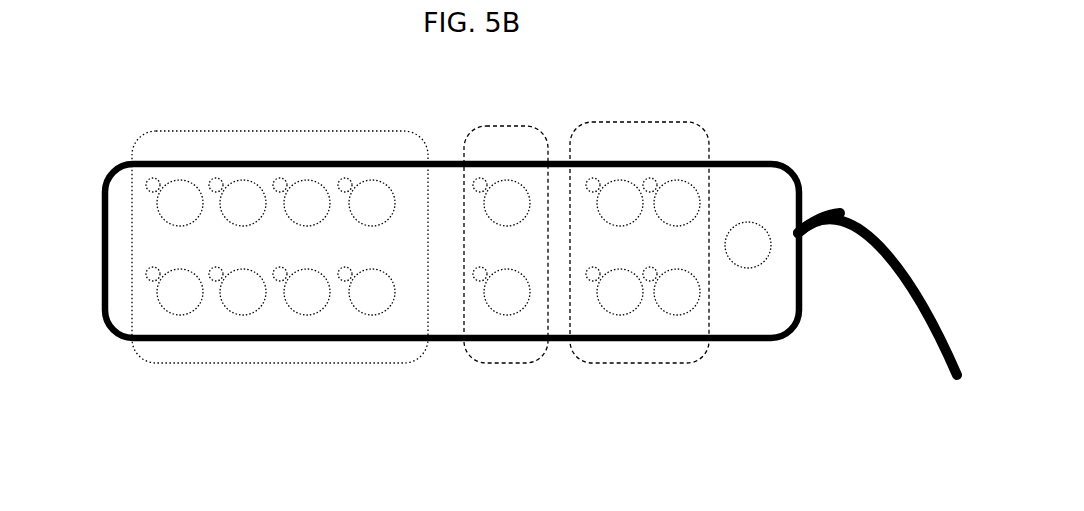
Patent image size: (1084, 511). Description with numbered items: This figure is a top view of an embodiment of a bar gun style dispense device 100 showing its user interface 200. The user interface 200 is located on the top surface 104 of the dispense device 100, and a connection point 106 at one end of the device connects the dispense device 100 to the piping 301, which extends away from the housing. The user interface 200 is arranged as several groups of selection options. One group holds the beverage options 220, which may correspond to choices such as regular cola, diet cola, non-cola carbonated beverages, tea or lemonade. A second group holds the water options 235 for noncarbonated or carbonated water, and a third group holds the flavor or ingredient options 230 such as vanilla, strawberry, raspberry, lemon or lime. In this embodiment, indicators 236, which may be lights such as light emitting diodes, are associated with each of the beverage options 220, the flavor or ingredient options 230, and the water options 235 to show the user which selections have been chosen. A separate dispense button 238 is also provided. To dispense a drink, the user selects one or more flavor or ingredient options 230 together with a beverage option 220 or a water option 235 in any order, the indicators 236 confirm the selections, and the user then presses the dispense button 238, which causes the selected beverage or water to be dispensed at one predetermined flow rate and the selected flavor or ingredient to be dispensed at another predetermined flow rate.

The dispense device 100 is at (420, 246).
The top surface 104 is at (113, 310).
The connection point 106 is at (805, 227).
The user interface 200 is at (420, 262).
The beverage options 220 is at (208, 370).
The flavor or ingredient options 230 is at (635, 370).
The water options 235 is at (490, 370).
The indicators 236 is at (282, 185).
The dispense button 238 is at (748, 222).
The piping 301 is at (863, 225).